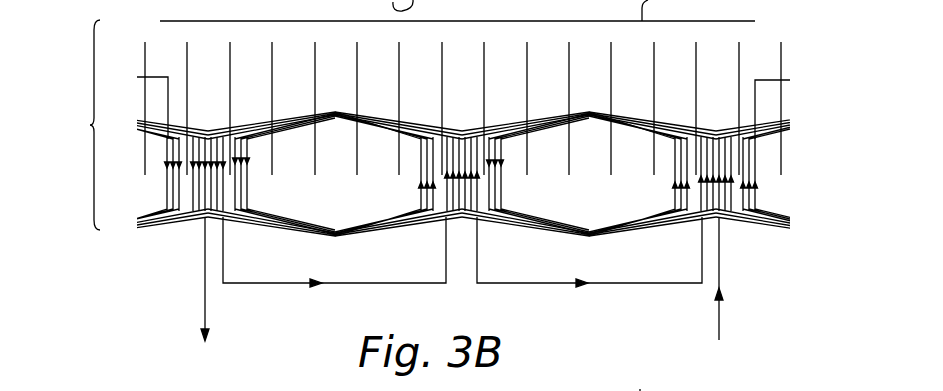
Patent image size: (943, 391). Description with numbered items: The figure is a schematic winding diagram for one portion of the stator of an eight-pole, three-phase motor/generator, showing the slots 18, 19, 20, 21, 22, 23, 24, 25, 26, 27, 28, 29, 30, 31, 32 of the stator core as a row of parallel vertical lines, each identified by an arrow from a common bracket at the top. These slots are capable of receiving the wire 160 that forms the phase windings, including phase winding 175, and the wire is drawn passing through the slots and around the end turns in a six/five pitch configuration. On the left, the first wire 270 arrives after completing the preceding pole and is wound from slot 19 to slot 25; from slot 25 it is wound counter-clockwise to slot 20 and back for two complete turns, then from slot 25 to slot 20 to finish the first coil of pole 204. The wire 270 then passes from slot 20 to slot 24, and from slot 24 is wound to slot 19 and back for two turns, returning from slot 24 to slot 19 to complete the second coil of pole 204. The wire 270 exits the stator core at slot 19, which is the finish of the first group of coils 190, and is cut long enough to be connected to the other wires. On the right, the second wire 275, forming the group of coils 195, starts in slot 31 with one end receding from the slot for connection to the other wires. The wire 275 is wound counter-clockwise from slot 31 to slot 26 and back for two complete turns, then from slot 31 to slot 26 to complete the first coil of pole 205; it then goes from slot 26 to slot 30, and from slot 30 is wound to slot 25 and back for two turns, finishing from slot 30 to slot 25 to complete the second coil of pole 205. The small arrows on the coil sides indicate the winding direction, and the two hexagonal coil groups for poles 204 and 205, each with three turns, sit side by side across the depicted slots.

The slot 18 is at (160, 21).
The slot 19 is at (209, 21).
The slot 20 is at (249, 21).
The slot 21 is at (291, 21).
The slot 22 is at (334, 21).
The slot 23 is at (376, 21).
The slot 24 is at (420, 21).
The slot 25 is at (461, 21).
The slot 26 is at (505, 21).
The slot 27 is at (548, 21).
The slot 28 is at (590, 21).
The slot 29 is at (632, 21).
The slot 30 is at (675, 21).
The slot 31 is at (715, 21).
The slot 32 is at (755, 21).
The wire 160 is at (67, 125).
The pole 204 is at (354, 210).
The pole 205 is at (623, 210).
The first wire 270 is at (205, 304).
The second wire 275 is at (719, 321).
The first group of coils 190 is at (213, 357).
The group of coils 195 is at (721, 339).
The phase winding 175 is at (645, 389).